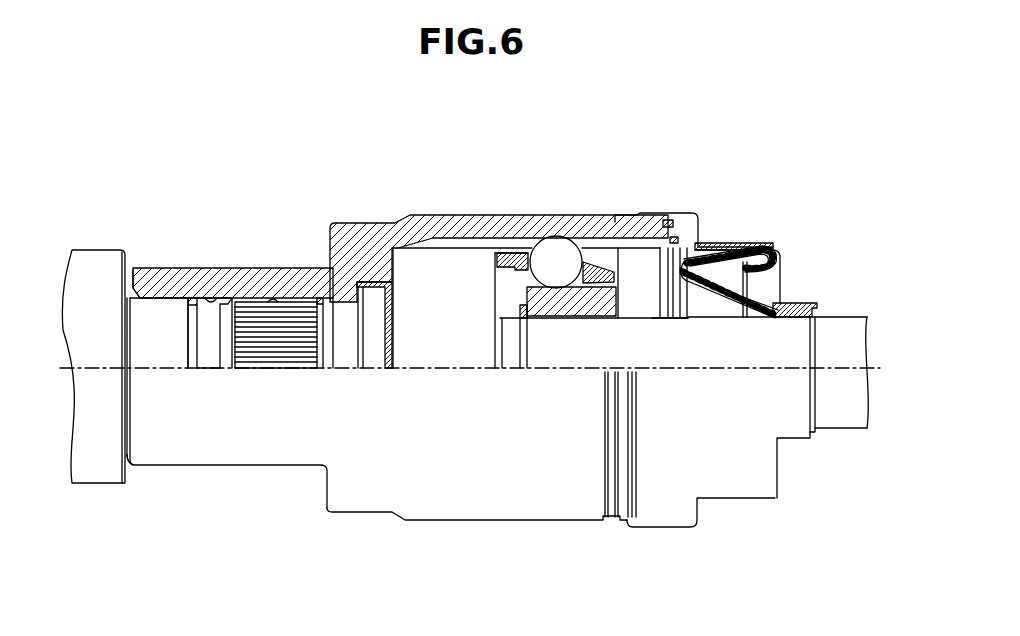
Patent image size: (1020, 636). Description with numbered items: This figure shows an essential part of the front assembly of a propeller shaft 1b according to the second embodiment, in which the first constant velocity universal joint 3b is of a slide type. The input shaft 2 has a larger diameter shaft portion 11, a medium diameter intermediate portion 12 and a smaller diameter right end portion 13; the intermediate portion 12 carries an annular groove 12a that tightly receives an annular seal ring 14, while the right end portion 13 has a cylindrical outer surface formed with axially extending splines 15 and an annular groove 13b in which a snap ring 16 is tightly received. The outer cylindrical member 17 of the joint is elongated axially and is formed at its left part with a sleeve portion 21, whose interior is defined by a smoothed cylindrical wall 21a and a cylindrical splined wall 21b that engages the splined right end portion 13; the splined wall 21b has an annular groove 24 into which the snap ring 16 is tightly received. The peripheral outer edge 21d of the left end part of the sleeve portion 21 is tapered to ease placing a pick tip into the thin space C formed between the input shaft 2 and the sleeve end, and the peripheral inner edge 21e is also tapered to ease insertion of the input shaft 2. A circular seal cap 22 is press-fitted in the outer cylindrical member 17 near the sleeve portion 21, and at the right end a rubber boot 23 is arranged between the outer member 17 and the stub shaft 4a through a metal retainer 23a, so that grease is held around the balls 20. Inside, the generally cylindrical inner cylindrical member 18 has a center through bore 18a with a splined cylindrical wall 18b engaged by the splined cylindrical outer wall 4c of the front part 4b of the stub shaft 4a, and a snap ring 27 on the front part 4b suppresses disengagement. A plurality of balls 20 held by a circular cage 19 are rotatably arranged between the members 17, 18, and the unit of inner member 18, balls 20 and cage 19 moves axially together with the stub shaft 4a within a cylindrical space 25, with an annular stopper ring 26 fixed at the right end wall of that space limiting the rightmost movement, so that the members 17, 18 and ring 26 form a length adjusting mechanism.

The propeller shaft 1b is at (645, 148).
The input shaft 2 is at (113, 485).
The first constant velocity universal joint 3b is at (565, 182).
The stub shaft 4a is at (700, 335).
The front part 4b is at (587, 350).
The splined cylindrical outer wall 4c is at (545, 322).
The larger diameter shaft portion 11 is at (108, 252).
The medium diameter intermediate portion 12 is at (150, 342).
The annular groove 12a is at (193, 352).
The smaller diameter right end portion 13 is at (245, 323).
The annular groove 13b is at (305, 357).
The annular seal ring 14 is at (192, 297).
The splines 15 is at (264, 340).
The snap ring 16 is at (330, 375).
The outer cylindrical member 17 is at (453, 220).
The inner cylindrical member 18 is at (580, 380).
The center through bore 18a is at (573, 433).
The splined cylindrical wall 18b is at (564, 318).
The circular cage 19 is at (528, 262).
The balls 20 is at (560, 250).
The sleeve portion 21 is at (162, 442).
The smoothed cylindrical wall 21a is at (220, 303).
The cylindrical splined wall 21b is at (275, 303).
The peripheral outer edge 21d is at (124, 300).
The peripheral inner edge 21e is at (122, 280).
The seal cap 22 is at (393, 307).
The rubber boot 23 is at (760, 307).
The metal retainer 23a is at (700, 247).
The annular groove 24 is at (320, 330).
The cylindrical space 25 is at (435, 280).
The annular stopper ring 26 is at (690, 235).
The snap ring 27 is at (523, 305).
The thin space C is at (127, 458).